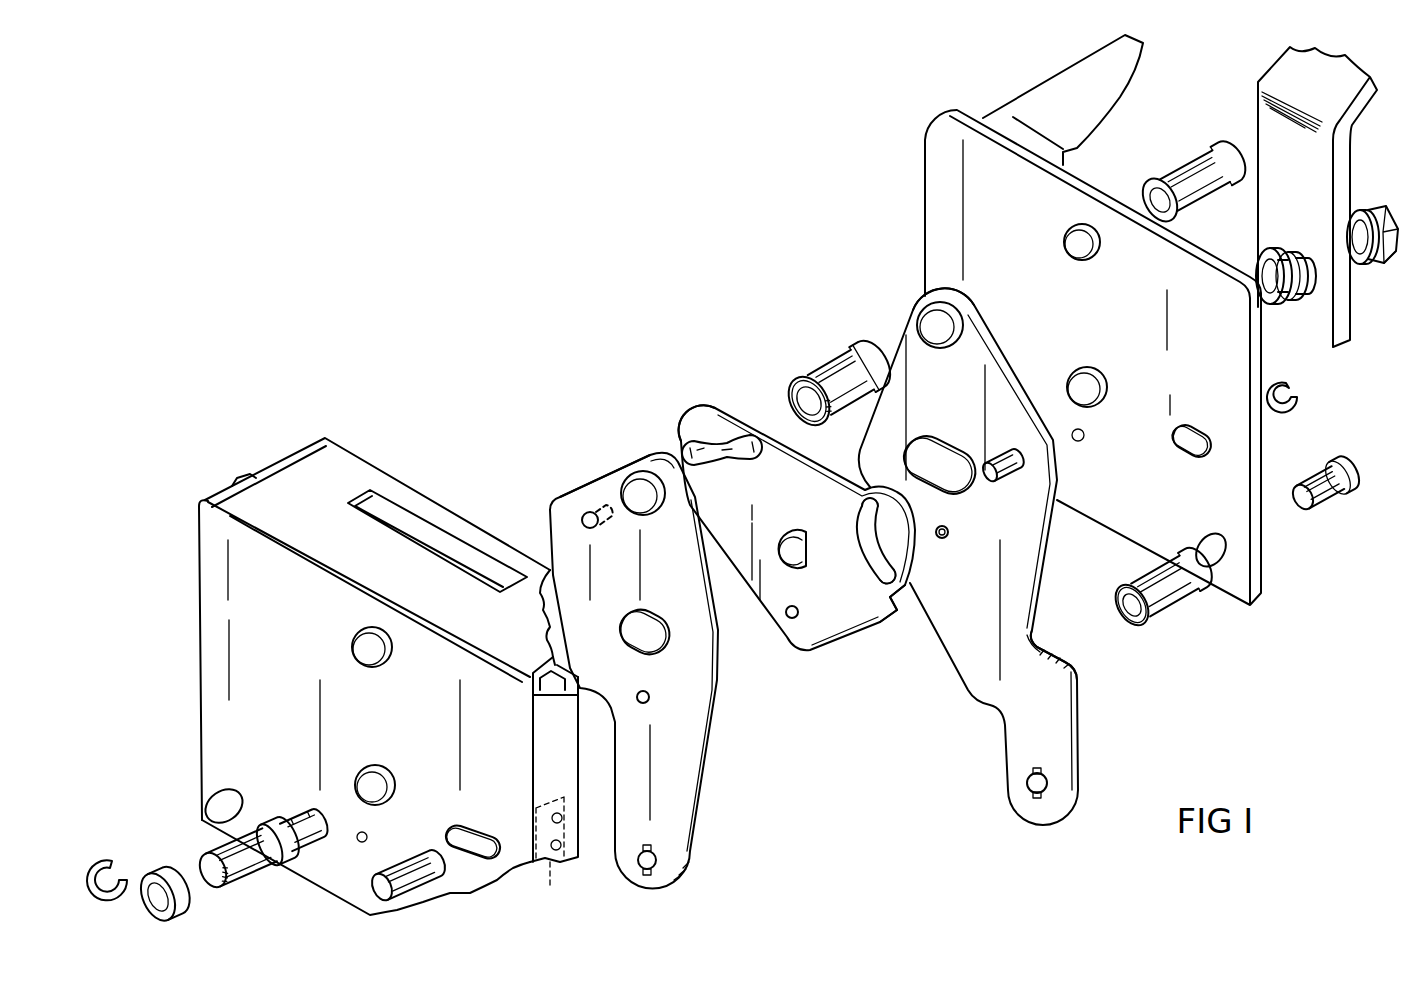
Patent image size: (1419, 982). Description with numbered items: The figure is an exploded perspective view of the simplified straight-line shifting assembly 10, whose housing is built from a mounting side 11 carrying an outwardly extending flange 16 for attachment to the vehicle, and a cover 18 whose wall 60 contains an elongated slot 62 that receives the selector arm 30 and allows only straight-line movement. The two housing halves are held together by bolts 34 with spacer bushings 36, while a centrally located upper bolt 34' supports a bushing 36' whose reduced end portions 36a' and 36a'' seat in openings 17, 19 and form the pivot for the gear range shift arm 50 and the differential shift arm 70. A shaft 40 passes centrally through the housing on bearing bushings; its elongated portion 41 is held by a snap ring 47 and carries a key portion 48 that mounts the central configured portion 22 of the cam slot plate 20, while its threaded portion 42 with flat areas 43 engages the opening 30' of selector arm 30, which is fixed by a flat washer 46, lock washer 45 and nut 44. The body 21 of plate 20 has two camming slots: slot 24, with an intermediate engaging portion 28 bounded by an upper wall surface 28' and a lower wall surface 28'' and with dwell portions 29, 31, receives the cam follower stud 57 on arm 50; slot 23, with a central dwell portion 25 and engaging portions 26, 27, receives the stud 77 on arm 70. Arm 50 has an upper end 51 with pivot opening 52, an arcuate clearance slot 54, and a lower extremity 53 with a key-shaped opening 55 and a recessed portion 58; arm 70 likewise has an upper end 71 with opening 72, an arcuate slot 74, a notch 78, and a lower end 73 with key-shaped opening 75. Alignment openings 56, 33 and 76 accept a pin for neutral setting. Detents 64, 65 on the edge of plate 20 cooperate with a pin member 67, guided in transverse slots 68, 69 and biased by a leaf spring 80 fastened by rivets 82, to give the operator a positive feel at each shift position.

The simplified shifting assembly 10 is at (656, 383).
The mounting side 11 is at (1254, 350).
The flange 16 is at (1027, 98).
The opening 17 is at (354, 640).
The cover 18 is at (199, 565).
The opening 19 is at (1096, 252).
The cam slot plate 20 is at (743, 548).
The body 21 is at (735, 522).
The central configured portion 22 is at (798, 556).
The camming surface slot 23 is at (848, 528).
The camming surface slot 24 is at (717, 430).
The intermediate dwell portion 25 is at (868, 546).
The engaging portion 26 is at (868, 508).
The engaging portion 27 is at (884, 574).
The intermediate engaging portion 28 is at (722, 417).
The upper wall surface 28' is at (677, 420).
The lowermost wall surface 28'' is at (744, 476).
The dwell portion 29 is at (700, 456).
The selector arm 30 is at (1317, 197).
The opening 30' is at (1296, 255).
The dwell portion 31 is at (751, 448).
The alignment opening 33 is at (800, 612).
The bolt 34 is at (1325, 467).
The bolt 34' is at (1194, 170).
The bushing 36 is at (1163, 598).
The bushing 36' is at (839, 372).
The reduced end portion 36a' is at (792, 383).
The bushing flange 36a'' is at (867, 347).
The shaft 40 is at (208, 840).
The elongated shaft portion 41 is at (243, 833).
The threaded portion 42 is at (295, 820).
The flat areas 43 is at (307, 840).
The nut 44 is at (1367, 207).
The lock washer 45 is at (1384, 265).
The flat washer 46 is at (1359, 264).
The snap ring 47 is at (101, 861).
The key portion 48 is at (280, 862).
The gear range shift arm 50 is at (710, 781).
The upper end 51 is at (617, 477).
The opening 52 is at (641, 485).
The lowermost extremity 53 is at (671, 871).
The arcuate slot 54 is at (668, 641).
The key-shaped opening 55 is at (658, 858).
The alignment opening 56 is at (650, 699).
The stud 57 is at (584, 510).
The recessed portion 58 is at (588, 695).
The wall 60 is at (370, 476).
The slot 62 is at (424, 534).
The detent 64 is at (894, 598).
The detent 65 is at (884, 623).
The pin member 67 is at (420, 878).
The transverse slot 68 is at (472, 830).
The transverse slot 69 is at (1195, 449).
The differential shift lever arm 70 is at (1050, 572).
The upper end portion 71 is at (968, 316).
The opening 72 is at (926, 318).
The lower end 73 is at (1030, 794).
The arcuate slot 74 is at (931, 456).
The key-shaped opening 75 is at (1048, 781).
The alignment opening 76 is at (948, 538).
The stud 77 is at (1008, 472).
The notch 78 is at (1045, 656).
The leaf spring 80 is at (549, 886).
The rivet 82 is at (560, 849).